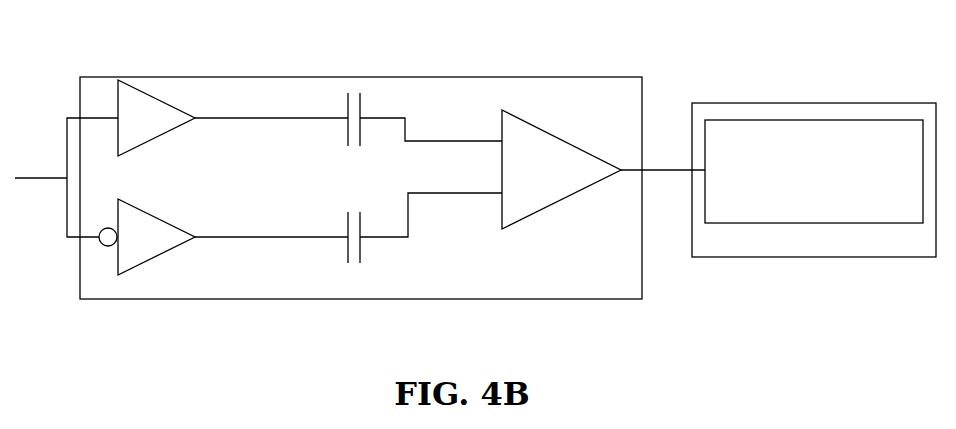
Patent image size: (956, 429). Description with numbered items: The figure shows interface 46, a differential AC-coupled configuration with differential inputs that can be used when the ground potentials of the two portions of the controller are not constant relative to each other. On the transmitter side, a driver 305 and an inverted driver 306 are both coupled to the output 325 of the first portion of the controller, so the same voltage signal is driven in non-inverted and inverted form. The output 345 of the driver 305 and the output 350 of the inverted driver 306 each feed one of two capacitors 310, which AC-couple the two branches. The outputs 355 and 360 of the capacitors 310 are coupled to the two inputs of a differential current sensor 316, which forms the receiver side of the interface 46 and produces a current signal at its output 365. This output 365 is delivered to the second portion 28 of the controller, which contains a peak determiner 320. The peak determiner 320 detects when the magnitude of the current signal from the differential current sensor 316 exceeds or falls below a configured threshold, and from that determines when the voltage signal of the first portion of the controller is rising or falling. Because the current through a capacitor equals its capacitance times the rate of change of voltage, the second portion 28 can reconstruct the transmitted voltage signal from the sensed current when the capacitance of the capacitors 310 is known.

The interface 46 is at (123, 68).
The output of first portion of controller 325 is at (36, 189).
The driver 305 is at (170, 142).
The inverted driver 306 is at (157, 272).
The output of driver 345 is at (258, 109).
The output of inverted driver 350 is at (221, 254).
The capacitor 310 is at (313, 190).
The output of capacitor 355 is at (456, 132).
The output of capacitor 360 is at (437, 207).
The differential current sensor 316 is at (558, 222).
The output of differential current sensor 365 is at (660, 183).
The peak determiner 320 is at (795, 246).
The second portion of controller 28 is at (867, 269).